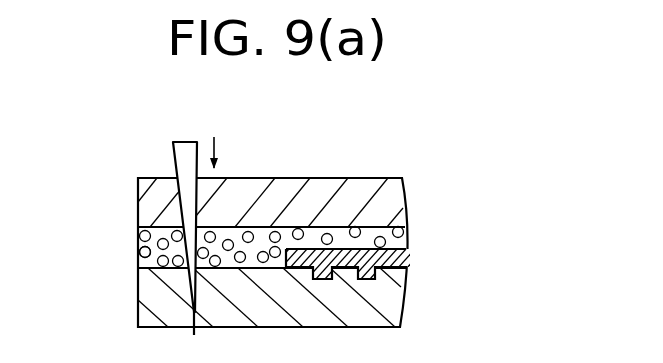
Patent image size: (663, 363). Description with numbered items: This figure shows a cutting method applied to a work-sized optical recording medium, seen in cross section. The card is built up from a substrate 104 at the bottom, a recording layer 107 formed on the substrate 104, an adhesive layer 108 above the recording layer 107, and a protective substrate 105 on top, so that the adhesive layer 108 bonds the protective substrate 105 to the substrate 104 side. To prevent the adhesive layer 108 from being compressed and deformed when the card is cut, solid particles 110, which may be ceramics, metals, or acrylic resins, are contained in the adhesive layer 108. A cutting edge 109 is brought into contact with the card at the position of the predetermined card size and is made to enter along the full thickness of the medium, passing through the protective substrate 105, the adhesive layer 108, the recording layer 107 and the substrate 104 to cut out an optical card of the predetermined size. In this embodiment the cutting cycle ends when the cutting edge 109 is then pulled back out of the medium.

The substrate 104 is at (402, 297).
The protective substrate 105 is at (404, 197).
The recording layer 107 is at (400, 257).
The adhesive layer 108 is at (408, 241).
The cutting edge 109 is at (185, 146).
The solid particles 110 is at (145, 252).